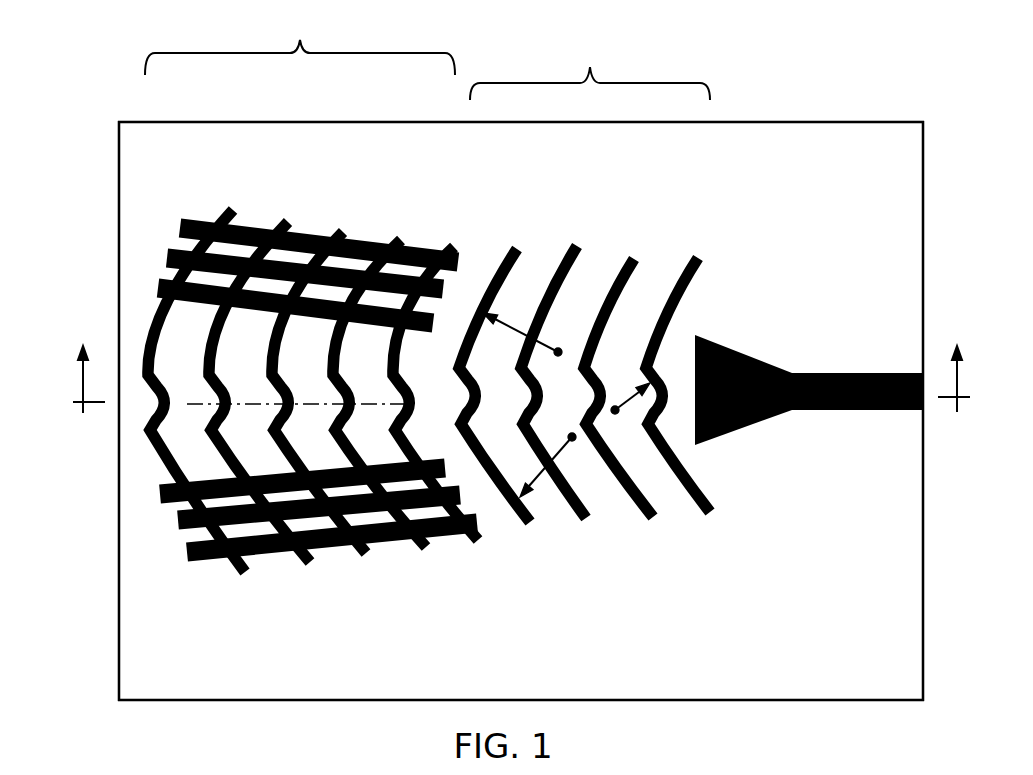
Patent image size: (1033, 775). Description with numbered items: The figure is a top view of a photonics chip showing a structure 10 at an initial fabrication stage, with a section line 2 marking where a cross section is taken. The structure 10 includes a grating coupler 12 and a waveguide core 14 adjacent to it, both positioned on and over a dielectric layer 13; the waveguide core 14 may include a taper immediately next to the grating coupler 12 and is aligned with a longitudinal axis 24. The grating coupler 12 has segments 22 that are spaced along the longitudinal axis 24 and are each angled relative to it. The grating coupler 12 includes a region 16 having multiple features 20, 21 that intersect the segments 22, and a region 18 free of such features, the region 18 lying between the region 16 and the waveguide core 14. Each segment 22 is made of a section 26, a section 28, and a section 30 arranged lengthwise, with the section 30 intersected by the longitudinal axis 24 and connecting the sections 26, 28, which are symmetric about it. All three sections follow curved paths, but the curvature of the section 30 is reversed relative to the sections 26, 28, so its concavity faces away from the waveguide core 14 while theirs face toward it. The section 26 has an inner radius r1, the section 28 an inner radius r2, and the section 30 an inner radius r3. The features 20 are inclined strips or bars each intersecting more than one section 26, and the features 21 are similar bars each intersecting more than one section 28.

The structure 10 is at (160, 105).
The grating coupler 12 is at (170, 187).
The dielectric layer 13 is at (851, 623).
The waveguide core 14 is at (840, 373).
The region 16 is at (302, 265).
The region 18 is at (590, 66).
The features 20 is at (404, 238).
The features 21 is at (330, 548).
The segments 22 is at (222, 584).
The longitudinal axis 24 is at (258, 406).
The section 26 is at (292, 220).
The section 28 is at (248, 572).
The section 30 is at (600, 372).
The inner radius r1 is at (522, 334).
The inner radius r2 is at (541, 465).
The inner radius r3 is at (630, 392).
The section line 2- 2 is at (521, 362).